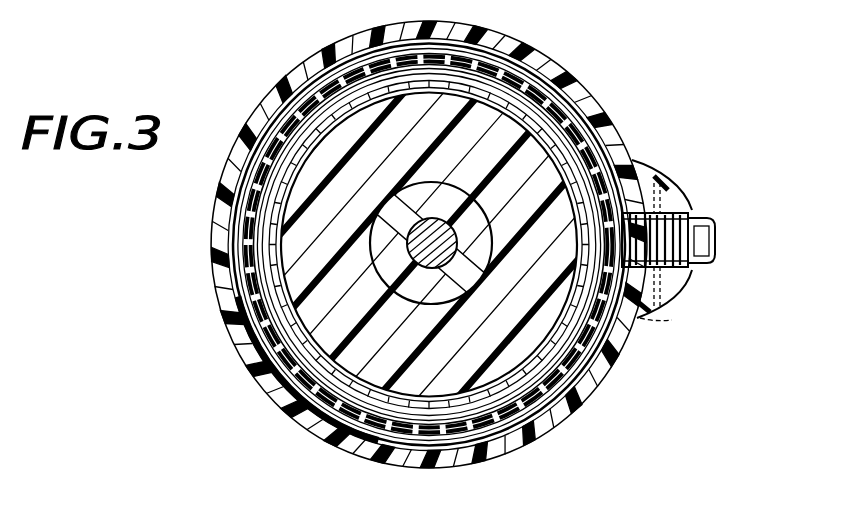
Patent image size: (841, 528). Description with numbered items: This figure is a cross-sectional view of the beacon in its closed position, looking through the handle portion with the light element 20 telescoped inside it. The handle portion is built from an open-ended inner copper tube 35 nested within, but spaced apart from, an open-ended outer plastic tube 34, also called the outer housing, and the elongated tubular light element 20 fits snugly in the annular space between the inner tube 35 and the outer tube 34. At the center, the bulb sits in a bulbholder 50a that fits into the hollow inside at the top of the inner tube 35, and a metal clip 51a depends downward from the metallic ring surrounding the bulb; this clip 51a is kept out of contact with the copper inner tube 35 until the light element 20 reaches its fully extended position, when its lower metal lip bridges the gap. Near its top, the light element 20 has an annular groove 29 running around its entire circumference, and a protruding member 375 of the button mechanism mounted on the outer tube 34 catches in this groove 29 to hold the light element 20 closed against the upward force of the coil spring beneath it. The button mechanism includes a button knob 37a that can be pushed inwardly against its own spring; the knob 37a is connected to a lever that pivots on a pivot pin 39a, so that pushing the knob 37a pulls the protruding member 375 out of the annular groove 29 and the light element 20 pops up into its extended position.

The light element 20 is at (516, 418).
The annular groove 29 is at (590, 121).
The outer tube 34 is at (636, 314).
The inner tube 35 is at (472, 397).
The protruding member 375 is at (646, 198).
The button knob 37a is at (718, 248).
The pivot pin 39a is at (674, 321).
The bulbholder 50a is at (362, 345).
The metal clip 51a is at (262, 298).